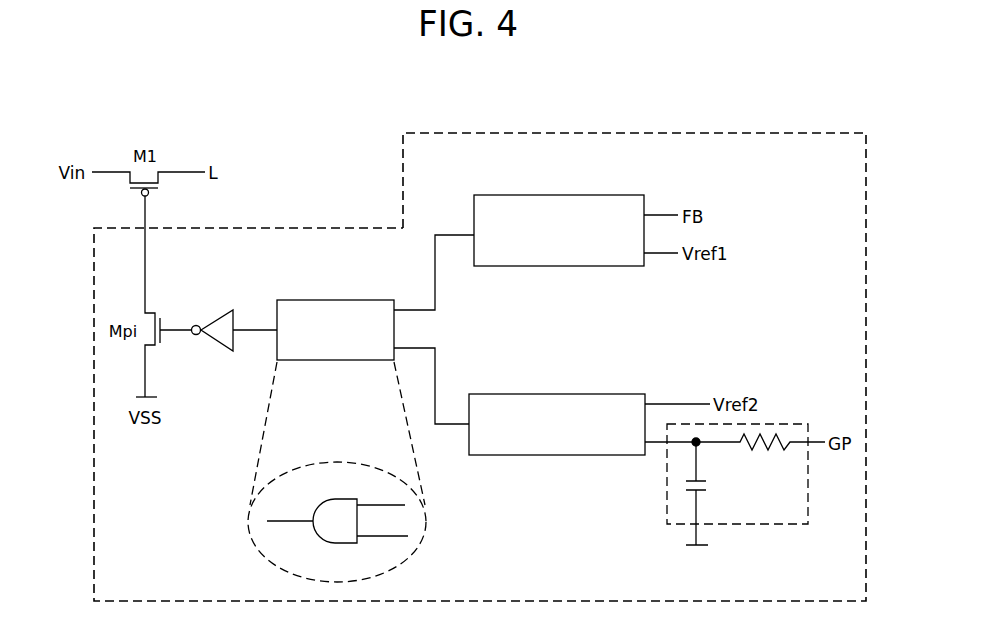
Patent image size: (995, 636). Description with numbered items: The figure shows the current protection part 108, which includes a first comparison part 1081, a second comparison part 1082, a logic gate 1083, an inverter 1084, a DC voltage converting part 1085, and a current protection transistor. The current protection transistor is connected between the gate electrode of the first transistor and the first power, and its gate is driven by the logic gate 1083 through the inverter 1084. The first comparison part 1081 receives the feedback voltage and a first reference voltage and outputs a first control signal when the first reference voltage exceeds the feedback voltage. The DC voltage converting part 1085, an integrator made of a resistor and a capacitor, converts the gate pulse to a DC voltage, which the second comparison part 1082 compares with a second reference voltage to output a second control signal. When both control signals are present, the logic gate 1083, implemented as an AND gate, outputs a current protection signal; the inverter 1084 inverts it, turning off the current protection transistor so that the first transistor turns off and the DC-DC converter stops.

The current protection part 108 is at (770, 133).
The first comparison part 1081 is at (568, 195).
The second comparison part 1082 is at (540, 457).
The logic gate 1083 is at (345, 300).
The inverter 1084 is at (218, 311).
The DC voltage converting part 1085 is at (780, 525).